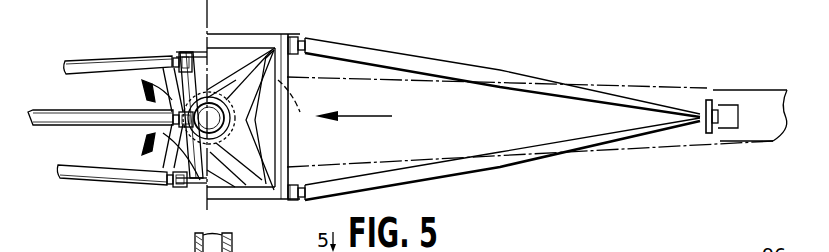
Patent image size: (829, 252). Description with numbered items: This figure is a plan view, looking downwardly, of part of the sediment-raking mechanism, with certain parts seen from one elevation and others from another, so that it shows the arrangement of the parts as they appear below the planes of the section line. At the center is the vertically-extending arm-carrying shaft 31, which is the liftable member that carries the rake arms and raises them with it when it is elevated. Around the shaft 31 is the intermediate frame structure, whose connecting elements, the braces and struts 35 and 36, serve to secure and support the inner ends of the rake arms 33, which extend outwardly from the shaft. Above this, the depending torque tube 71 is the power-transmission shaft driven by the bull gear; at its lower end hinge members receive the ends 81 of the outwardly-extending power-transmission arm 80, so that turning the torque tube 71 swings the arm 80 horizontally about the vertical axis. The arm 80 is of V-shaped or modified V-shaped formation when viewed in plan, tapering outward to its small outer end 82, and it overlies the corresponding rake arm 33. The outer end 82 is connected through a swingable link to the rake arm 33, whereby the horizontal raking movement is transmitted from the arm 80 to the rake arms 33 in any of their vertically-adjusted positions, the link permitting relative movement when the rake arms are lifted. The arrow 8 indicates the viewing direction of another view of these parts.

The viewing direction arrow 8 is at (361, 116).
The arm-carrying shaft 31 is at (168, 182).
The rake arms 33 is at (135, 56).
The braces and struts 35 is at (288, 136).
The braces and struts 36 is at (262, 100).
The torque tube 71 is at (240, 72).
The power-transmission arms 80 is at (432, 58).
The ends of power-transmission arms 81 is at (300, 36).
The outer ends of power-transmission arms 82 is at (710, 100).